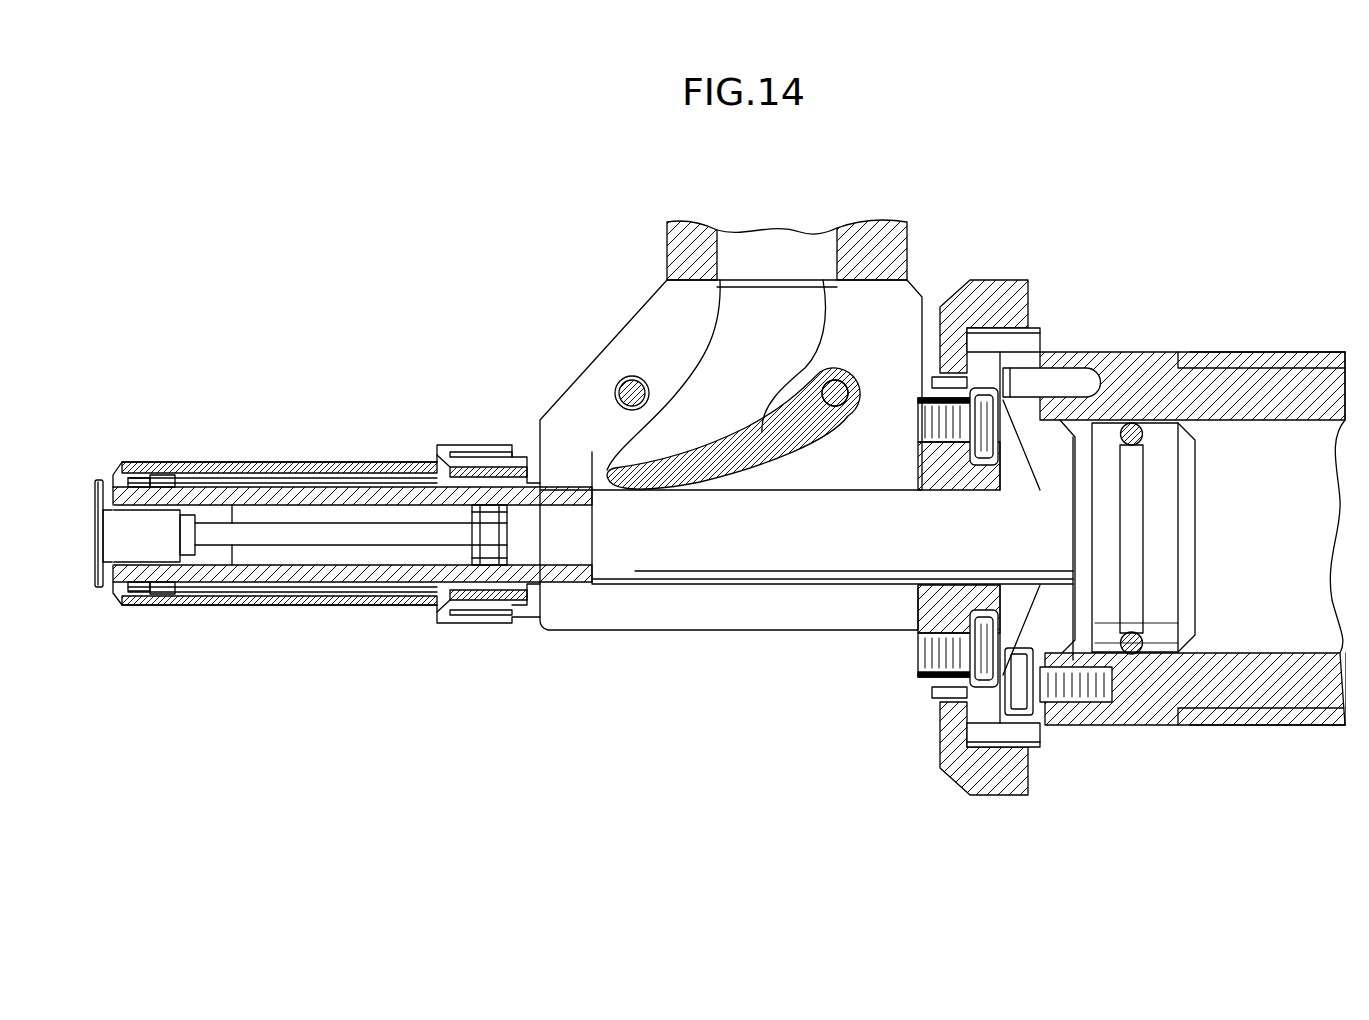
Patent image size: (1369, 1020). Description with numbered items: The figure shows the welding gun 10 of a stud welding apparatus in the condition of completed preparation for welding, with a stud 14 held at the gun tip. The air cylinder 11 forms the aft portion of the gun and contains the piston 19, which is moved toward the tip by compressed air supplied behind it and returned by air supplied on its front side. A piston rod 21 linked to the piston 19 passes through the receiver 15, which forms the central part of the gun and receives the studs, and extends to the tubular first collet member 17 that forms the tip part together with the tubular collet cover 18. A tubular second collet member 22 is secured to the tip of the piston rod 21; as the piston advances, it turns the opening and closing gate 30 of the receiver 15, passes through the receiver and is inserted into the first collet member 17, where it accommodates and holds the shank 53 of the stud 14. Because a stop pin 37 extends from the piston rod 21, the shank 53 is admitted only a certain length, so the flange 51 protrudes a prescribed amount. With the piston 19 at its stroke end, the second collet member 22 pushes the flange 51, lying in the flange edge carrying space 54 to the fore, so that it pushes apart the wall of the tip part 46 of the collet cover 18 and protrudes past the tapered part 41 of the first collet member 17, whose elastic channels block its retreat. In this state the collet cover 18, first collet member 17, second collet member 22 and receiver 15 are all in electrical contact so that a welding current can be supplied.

The welding gun 10 is at (1150, 325).
The air cylinder 11 is at (1290, 668).
The stud 14 is at (86, 581).
The receiver 15 is at (638, 353).
The first collet member 17 is at (277, 470).
The collet cover 18 is at (213, 470).
The piston 19 is at (1158, 602).
The piston rod 21 is at (770, 548).
The second collet member 22 is at (272, 575).
The opening and closing gate 30 is at (765, 440).
The stop pin 37 is at (317, 532).
The tapered part 41 is at (167, 468).
The tip part of collet cover 46 is at (126, 596).
The flange 51 is at (88, 480).
The shank 53 is at (163, 548).
The flange edge carrying space 54 is at (143, 470).